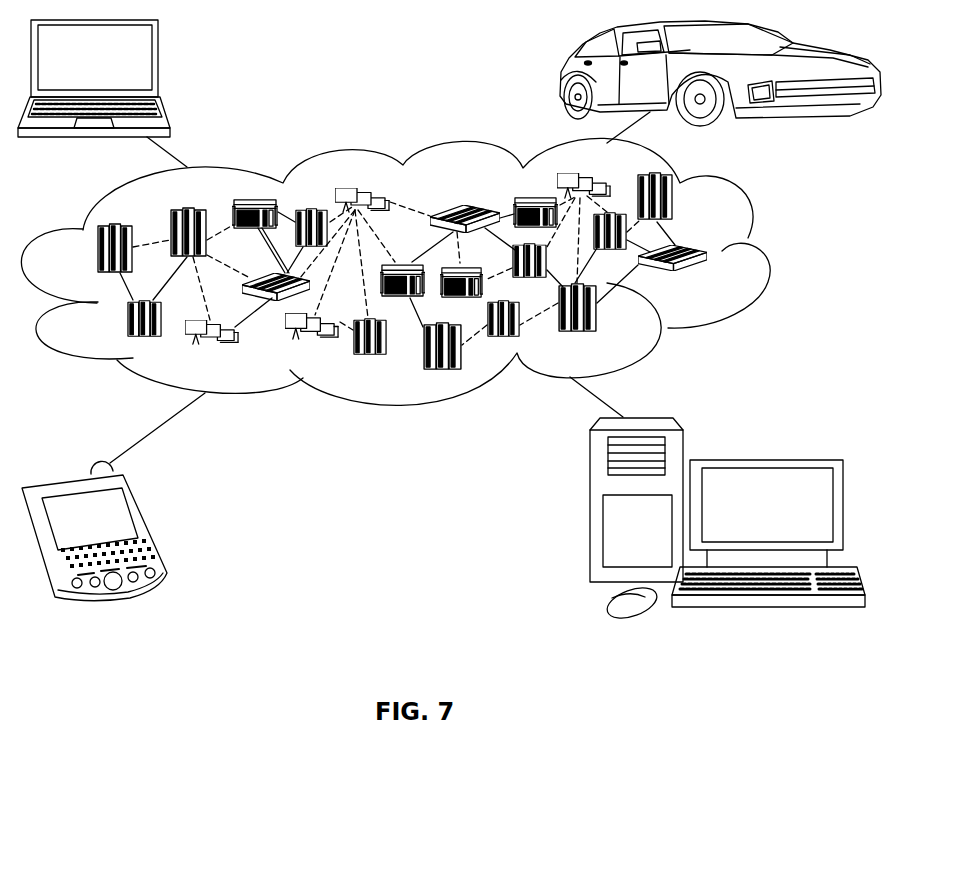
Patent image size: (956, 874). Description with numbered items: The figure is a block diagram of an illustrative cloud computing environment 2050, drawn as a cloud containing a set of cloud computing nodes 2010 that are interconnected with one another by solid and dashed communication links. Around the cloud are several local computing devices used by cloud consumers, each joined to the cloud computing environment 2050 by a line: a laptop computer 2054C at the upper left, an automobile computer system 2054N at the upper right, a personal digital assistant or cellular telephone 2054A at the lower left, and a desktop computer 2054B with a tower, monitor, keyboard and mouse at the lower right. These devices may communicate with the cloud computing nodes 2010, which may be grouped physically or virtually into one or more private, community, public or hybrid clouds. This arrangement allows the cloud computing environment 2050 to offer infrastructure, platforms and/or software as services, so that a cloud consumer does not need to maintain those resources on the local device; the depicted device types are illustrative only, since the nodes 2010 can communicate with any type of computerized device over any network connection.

The laptop computer 2054C is at (158, 63).
The automobile computer system 2054N is at (566, 73).
The cloud computing environment 2050 is at (760, 253).
The cloud computing nodes 2010 is at (716, 278).
The personal digital assistant (PDA) or cellular telephone 2054A is at (152, 526).
The desktop computer 2054B is at (772, 444).